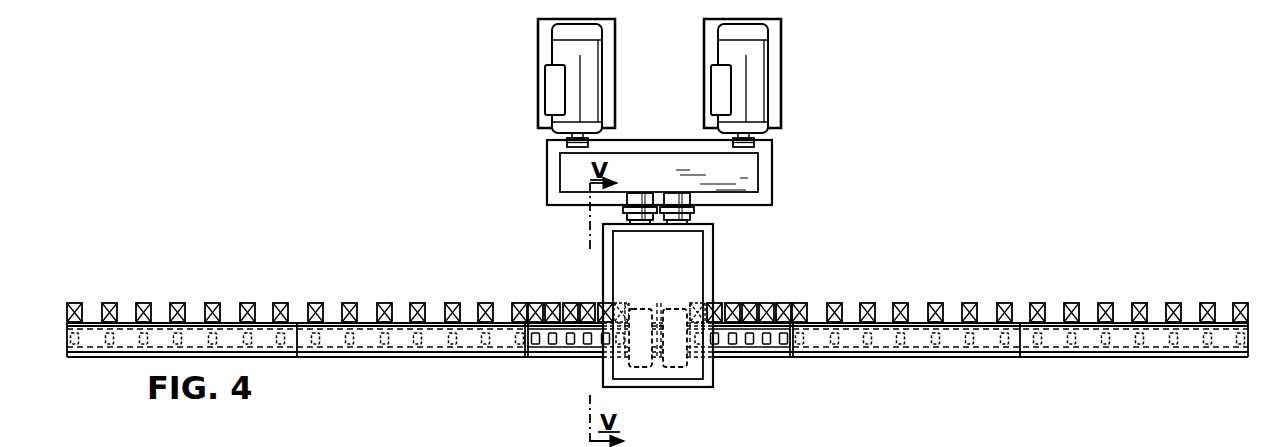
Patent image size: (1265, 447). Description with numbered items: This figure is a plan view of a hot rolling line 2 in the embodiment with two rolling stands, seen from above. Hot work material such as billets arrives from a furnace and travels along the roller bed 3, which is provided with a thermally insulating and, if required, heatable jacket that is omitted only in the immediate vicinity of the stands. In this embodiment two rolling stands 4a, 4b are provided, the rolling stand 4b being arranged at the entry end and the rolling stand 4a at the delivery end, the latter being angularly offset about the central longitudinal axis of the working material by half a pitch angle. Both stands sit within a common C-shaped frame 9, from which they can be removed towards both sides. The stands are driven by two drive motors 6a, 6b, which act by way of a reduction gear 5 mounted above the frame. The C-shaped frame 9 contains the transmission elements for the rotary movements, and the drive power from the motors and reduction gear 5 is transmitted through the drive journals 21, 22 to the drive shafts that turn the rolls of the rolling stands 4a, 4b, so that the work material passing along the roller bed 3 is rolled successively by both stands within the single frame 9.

The hot rolling line 2 is at (889, 232).
The roller bed 3 is at (193, 325).
The rolling stand 4a is at (676, 313).
The rolling stand 4b is at (637, 313).
The reduction gear 5 is at (660, 162).
The drive motor 6a is at (762, 50).
The drive motor 6b is at (558, 51).
The C-shaped frame 9 is at (700, 240).
The drive journal 21 is at (642, 214).
The drive journal 22 is at (677, 215).